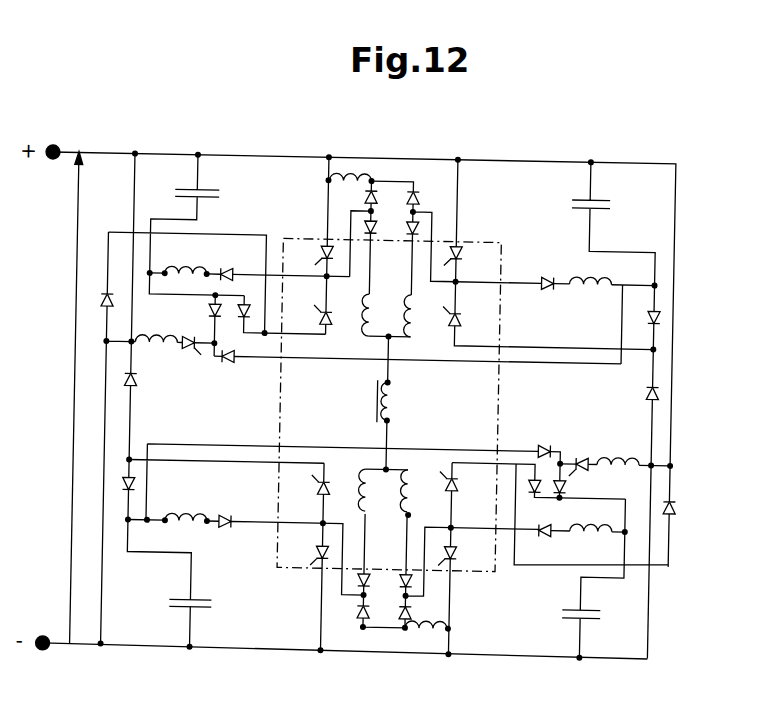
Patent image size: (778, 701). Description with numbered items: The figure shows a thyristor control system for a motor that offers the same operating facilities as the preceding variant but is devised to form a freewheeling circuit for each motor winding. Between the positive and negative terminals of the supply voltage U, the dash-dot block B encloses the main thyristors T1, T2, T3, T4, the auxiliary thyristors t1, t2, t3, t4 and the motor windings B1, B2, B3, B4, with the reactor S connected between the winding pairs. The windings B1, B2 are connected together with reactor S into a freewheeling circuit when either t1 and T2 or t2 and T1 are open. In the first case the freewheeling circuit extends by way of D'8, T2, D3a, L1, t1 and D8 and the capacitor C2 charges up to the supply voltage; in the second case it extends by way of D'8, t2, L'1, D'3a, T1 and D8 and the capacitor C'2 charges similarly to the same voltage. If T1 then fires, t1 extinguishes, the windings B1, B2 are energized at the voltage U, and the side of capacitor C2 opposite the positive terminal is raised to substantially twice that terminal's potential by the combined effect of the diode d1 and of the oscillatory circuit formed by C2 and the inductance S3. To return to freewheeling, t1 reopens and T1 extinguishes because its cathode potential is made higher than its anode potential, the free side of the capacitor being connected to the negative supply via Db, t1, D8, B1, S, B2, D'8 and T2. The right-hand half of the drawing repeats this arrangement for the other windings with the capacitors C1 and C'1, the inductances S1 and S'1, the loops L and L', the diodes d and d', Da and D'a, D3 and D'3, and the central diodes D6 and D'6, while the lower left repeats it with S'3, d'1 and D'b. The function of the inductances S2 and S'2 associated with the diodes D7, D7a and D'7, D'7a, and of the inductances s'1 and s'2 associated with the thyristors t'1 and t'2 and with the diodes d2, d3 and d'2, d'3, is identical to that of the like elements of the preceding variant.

The supply voltage U is at (66, 397).
The bridge circuit block B is at (300, 226).
The capacitor C1 is at (609, 198).
The capacitor C2 is at (210, 198).
The capacitor C'1 is at (602, 578).
The capacitor C'2 is at (209, 604).
The inductance loop L is at (585, 324).
The inductance loop L1 is at (247, 230).
The inductance loop L' is at (592, 527).
The inductance loop L'1 is at (333, 486).
The reactor S is at (366, 403).
The inductance S1 is at (584, 282).
The inductance S2 is at (346, 170).
The inductance S3 is at (180, 268).
The inductance S'1 is at (588, 517).
The inductance S'2 is at (426, 655).
The inductance S'3 is at (174, 504).
The inductance s'1 is at (157, 328).
The inductance s'2 is at (634, 448).
The motor winding B1 is at (364, 305).
The motor winding B2 is at (364, 478).
The motor winding B3 is at (412, 312).
The motor winding B4 is at (408, 504).
The thyristor T1 is at (320, 250).
The thyristor T2 is at (320, 546).
The thyristor T3 is at (465, 248).
The thyristor T4 is at (465, 548).
The thyristor t1 is at (321, 316).
The thyristor t2 is at (322, 482).
The thyristor t3 is at (465, 316).
The thyristor t4 is at (452, 484).
The thyristor t'1 is at (197, 359).
The thyristor t'2 is at (580, 453).
The diode d is at (512, 271).
The diode d1 is at (229, 266).
The diode d2 is at (234, 360).
The diode d3 is at (212, 307).
The diode d' is at (509, 540).
The diode d'1 is at (290, 541).
The diode d'2 is at (577, 485).
The diode d'3 is at (547, 453).
The diode Da is at (662, 307).
The diode Db is at (282, 309).
The diode D'a is at (538, 490).
The diode D'b is at (107, 470).
The diode D3 is at (651, 387).
The diode D3a is at (103, 300).
The diode D'3 is at (688, 508).
The diode D'3a is at (151, 391).
The diode D6 is at (409, 222).
The diode D7 is at (421, 194).
The diode D7a is at (368, 192).
The diode D8 is at (377, 229).
The diode D'6 is at (413, 566).
The diode D'7 is at (395, 628).
The diode D'7a is at (363, 624).
The diode D'8 is at (374, 575).